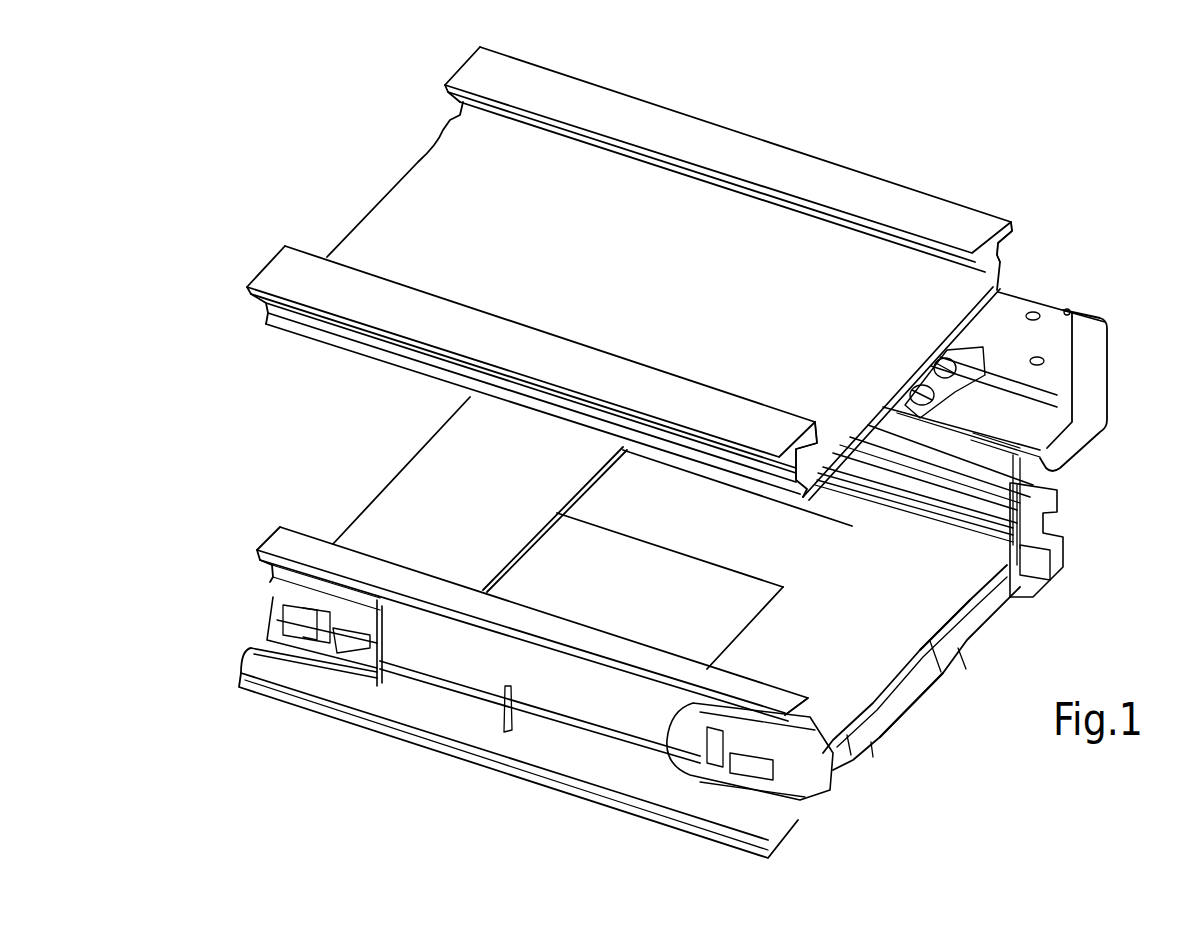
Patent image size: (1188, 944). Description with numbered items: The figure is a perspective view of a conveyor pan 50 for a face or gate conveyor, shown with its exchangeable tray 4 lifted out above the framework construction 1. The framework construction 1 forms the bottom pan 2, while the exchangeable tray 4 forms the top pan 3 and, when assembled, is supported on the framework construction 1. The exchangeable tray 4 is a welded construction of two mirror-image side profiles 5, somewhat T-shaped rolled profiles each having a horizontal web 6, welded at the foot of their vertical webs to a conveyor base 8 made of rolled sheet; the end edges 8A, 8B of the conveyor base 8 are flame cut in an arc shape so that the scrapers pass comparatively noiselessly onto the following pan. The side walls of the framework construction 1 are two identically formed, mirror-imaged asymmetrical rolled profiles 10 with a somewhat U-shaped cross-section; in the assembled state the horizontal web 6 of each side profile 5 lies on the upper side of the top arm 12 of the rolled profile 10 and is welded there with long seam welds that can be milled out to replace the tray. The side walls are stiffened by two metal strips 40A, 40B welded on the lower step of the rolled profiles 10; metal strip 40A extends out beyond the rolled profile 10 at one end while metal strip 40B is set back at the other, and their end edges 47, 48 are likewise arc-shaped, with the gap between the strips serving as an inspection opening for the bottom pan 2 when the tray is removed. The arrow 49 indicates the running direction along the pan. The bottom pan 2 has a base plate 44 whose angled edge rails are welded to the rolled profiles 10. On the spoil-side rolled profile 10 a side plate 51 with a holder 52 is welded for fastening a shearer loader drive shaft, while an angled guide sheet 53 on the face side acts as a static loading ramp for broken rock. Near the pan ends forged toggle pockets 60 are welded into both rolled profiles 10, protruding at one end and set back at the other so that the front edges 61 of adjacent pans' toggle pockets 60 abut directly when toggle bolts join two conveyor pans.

The framework construction 1 is at (671, 635).
The bottom pan 2 is at (666, 583).
The top pan 3 is at (640, 301).
The exchangeable tray 4 is at (640, 273).
The side profile 5 is at (993, 250).
The horizontal web 6 is at (283, 268).
The conveyor base 8 is at (423, 183).
The edge of the conveyor base 8A is at (910, 373).
The edge of the conveyor base 8B is at (377, 197).
The rolled profile 10 is at (993, 503).
The top arm 12 is at (277, 530).
The metal strip 40A is at (933, 668).
The metal strip 40B is at (410, 477).
The base plate 44 is at (903, 703).
The end edge of the metal strip 40A 47 is at (958, 668).
The end edge of the metal strip 40B 48 is at (377, 490).
The sliding direction 49 is at (798, 550).
The conveyor pan 50 is at (989, 321).
The side plate 51 is at (1040, 432).
The holder 52 is at (940, 403).
The angled guide sheet 53 is at (580, 762).
The toggle pocket 60 is at (253, 600).
The front edge 61 is at (270, 627).